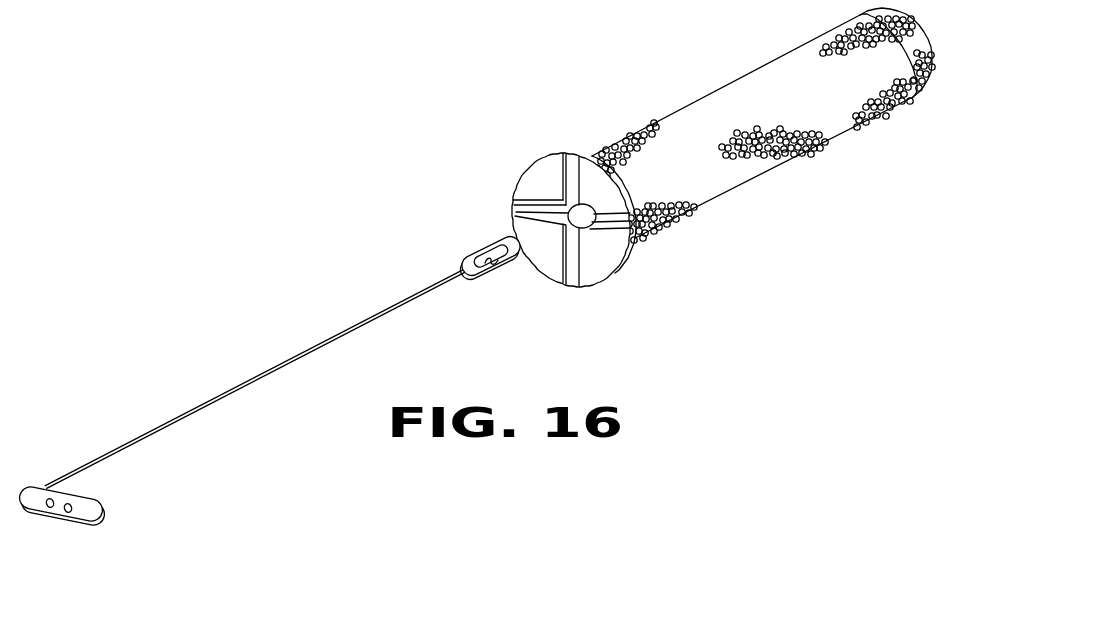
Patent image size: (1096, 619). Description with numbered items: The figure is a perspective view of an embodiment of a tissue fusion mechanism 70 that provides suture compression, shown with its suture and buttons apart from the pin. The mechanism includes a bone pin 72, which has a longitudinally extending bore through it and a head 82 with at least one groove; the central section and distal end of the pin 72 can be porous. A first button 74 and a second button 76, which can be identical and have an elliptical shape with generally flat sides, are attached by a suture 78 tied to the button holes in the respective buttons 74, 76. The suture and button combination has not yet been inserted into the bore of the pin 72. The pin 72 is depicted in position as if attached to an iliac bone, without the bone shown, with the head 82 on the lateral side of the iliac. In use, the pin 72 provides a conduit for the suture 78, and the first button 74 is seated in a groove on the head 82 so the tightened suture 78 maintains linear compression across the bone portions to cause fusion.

The tissue fusion mechanism 70 is at (240, 257).
The bone pin 72 is at (765, 167).
The first button 74 is at (58, 515).
The second button 76 is at (492, 277).
The suture 78 is at (282, 368).
The head 82 is at (610, 268).